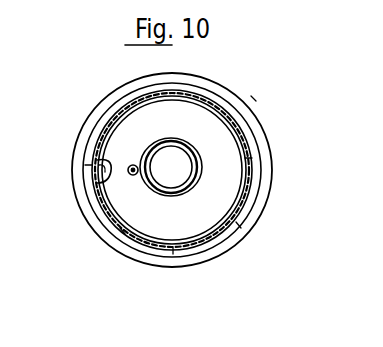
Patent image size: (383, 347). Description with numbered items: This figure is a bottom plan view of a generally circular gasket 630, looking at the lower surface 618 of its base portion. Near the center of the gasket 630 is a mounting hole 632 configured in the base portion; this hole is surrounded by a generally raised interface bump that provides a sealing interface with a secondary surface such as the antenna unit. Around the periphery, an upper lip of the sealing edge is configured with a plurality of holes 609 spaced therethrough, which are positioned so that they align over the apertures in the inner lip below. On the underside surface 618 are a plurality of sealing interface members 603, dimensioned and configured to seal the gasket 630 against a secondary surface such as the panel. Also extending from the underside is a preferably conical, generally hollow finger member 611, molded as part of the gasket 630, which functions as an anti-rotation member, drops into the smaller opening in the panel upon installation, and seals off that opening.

The gasket 630 is at (215, 157).
The holes 609 is at (112, 117).
The lower surface 618 is at (205, 128).
The mounting hole 632 is at (170, 226).
The finger member 611 is at (85, 213).
The sealing interface members 603 is at (106, 187).